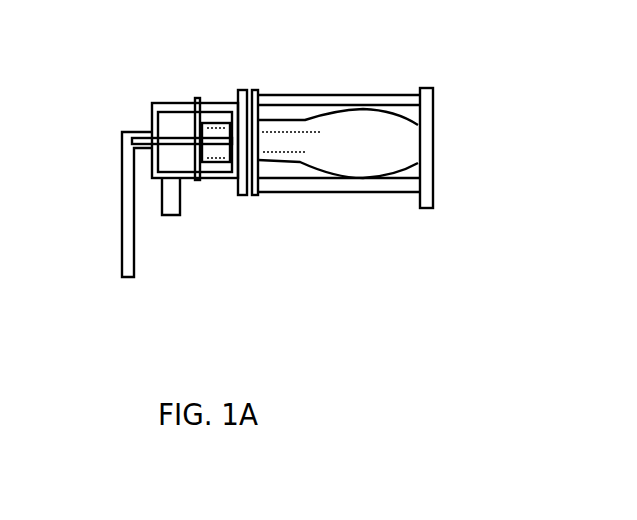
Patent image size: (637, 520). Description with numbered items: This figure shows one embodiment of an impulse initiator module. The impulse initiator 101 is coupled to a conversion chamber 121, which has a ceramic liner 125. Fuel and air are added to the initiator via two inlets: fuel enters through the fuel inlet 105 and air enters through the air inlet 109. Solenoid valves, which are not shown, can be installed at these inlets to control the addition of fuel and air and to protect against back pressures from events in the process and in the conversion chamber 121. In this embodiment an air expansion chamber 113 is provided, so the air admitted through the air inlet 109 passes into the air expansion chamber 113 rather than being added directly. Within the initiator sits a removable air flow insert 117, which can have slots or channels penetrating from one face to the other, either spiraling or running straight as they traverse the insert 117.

The impulse initiator 101 is at (314, 69).
The fuel inlet 105 is at (125, 284).
The air inlet 109 is at (167, 218).
The air expansion chamber 113 is at (175, 127).
The air flow insert 117 is at (213, 150).
The conversion chamber 121 is at (367, 145).
The ceramic liner 125 is at (405, 120).